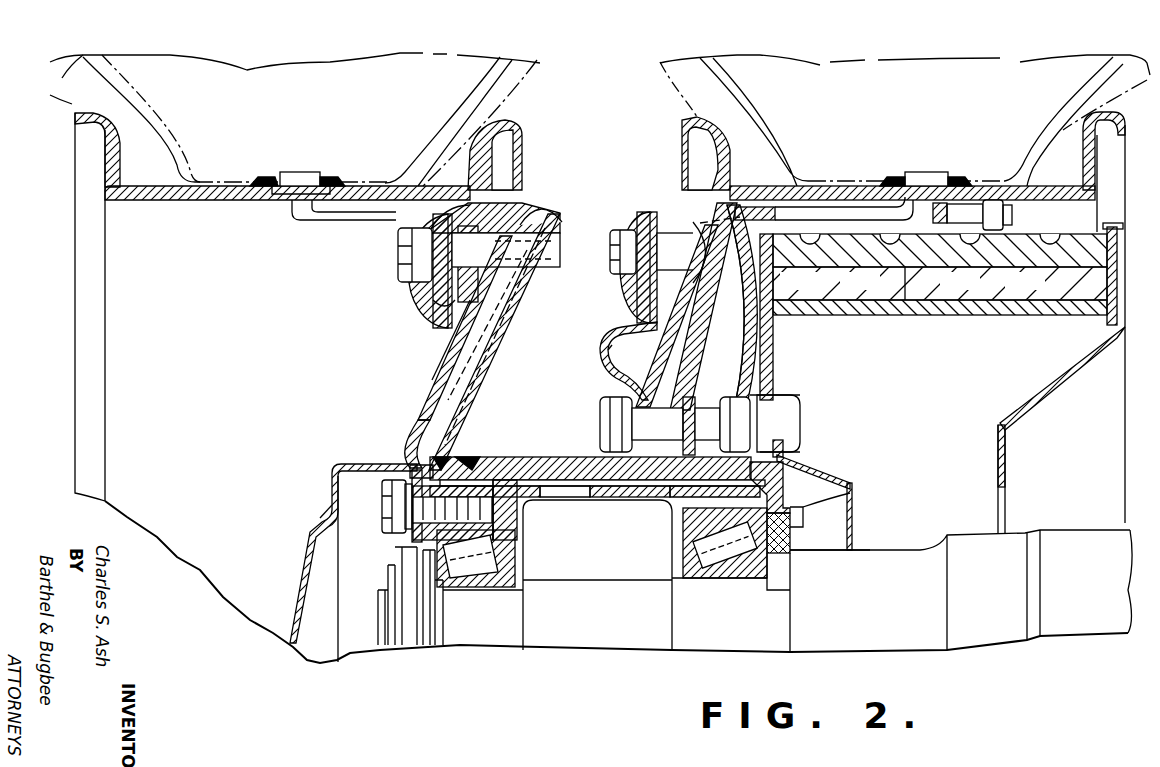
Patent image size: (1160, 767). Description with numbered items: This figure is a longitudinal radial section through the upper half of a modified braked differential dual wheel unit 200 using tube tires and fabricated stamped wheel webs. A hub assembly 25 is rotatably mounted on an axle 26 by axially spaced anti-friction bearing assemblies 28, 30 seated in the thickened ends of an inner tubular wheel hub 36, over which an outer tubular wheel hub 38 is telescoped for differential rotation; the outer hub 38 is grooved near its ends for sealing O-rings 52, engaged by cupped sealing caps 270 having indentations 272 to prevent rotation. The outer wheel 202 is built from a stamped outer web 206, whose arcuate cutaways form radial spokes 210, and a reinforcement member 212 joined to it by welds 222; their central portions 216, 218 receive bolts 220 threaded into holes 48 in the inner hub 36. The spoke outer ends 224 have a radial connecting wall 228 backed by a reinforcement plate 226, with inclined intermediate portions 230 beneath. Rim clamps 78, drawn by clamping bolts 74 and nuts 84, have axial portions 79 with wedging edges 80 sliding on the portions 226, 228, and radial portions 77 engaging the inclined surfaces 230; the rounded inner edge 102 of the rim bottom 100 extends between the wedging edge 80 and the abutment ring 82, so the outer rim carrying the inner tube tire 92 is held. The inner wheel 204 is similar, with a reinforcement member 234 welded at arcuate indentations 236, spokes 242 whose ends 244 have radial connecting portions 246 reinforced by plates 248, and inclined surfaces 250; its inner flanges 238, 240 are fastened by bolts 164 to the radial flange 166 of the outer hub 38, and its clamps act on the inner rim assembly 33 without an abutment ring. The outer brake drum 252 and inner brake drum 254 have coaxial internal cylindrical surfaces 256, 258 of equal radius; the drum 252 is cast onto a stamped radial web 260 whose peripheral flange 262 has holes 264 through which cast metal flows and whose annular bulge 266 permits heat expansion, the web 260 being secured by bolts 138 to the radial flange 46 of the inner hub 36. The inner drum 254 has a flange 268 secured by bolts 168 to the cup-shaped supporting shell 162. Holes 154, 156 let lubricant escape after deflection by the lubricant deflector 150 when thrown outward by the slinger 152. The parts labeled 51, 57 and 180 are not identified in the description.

The inner tube tire 92 is at (68, 68).
The braked differential dual wheel unit 200 is at (68, 135).
The rim bottom 100 is at (198, 197).
The rivet 51 is at (370, 185).
The wedging inner edge 80 is at (462, 187).
The axial portion 79 is at (445, 222).
The rounded inner edge 102 is at (500, 210).
The abutment ring 82 is at (528, 214).
The weld 222 is at (562, 216).
The rim clamping bolt 74 is at (396, 262).
The rim clamp 78 is at (400, 292).
The radial portion 77 is at (438, 306).
The connecting wall 228 is at (506, 251).
The reinforcement plate 226 is at (472, 290).
The nut 84 is at (398, 236).
The spoke end 244 is at (658, 232).
The radial connecting portion 246 is at (640, 312).
The reinforcement plate 248 is at (733, 188).
The inner rim assembly 33 is at (835, 185).
The flange 268 is at (963, 203).
The bolt 168 is at (1012, 214).
The arcuate indentation 236 is at (650, 316).
The spoke 210 is at (640, 328).
The inner wheel 204 is at (598, 358).
The inclined surface 250 is at (628, 354).
The spoke outer end 224 is at (487, 325).
The intermediate portion 230 is at (445, 345).
The outer wheel 202 is at (424, 372).
The reinforcement member 212 is at (480, 410).
The outer web 206 is at (404, 406).
The bolt 164 is at (598, 416).
The central portion 218 is at (447, 458).
The outer tubular wheel hub 38 is at (565, 455).
The sealing cap 270 is at (468, 465).
The central portion 216 is at (430, 457).
The indentation 272 is at (332, 480).
The bolt 220 is at (332, 503).
The O-ring 52 is at (597, 471).
The inner flange 238 is at (550, 478).
The inner flange 240 is at (704, 478).
The reinforcement member 234 is at (657, 424).
The radial flange 166 is at (692, 398).
The cup-shaped supporting shell 162 is at (740, 380).
The spoke 242 is at (758, 315).
The annular bulge 266 is at (758, 333).
The radial web 260 is at (790, 378).
The radial bolt-on flange 46 is at (785, 390).
The bolt 138 is at (800, 410).
The hole 156 is at (800, 440).
The hole 154 is at (800, 460).
The lubricant deflector 150 is at (853, 478).
The slinger 152 is at (852, 496).
The peripheral flange 262 is at (800, 282).
The hole 264 is at (860, 282).
The internal cylindrical surface 256 is at (960, 282).
The internal cylindrical surface 258 is at (1025, 282).
The outer brake drum 252 is at (898, 298).
The brake shoe 180 is at (985, 312).
The inner brake drum 254 is at (1058, 312).
The hub assembly 25 is at (404, 534).
The threaded hole 48 is at (495, 523).
The inner tubular wheel hub 36 is at (582, 505).
The wheel bearing assembly 28 is at (500, 560).
The wheel bearing assembly 30 is at (690, 548).
The spacer 57 is at (760, 507).
The axle 26 is at (608, 650).